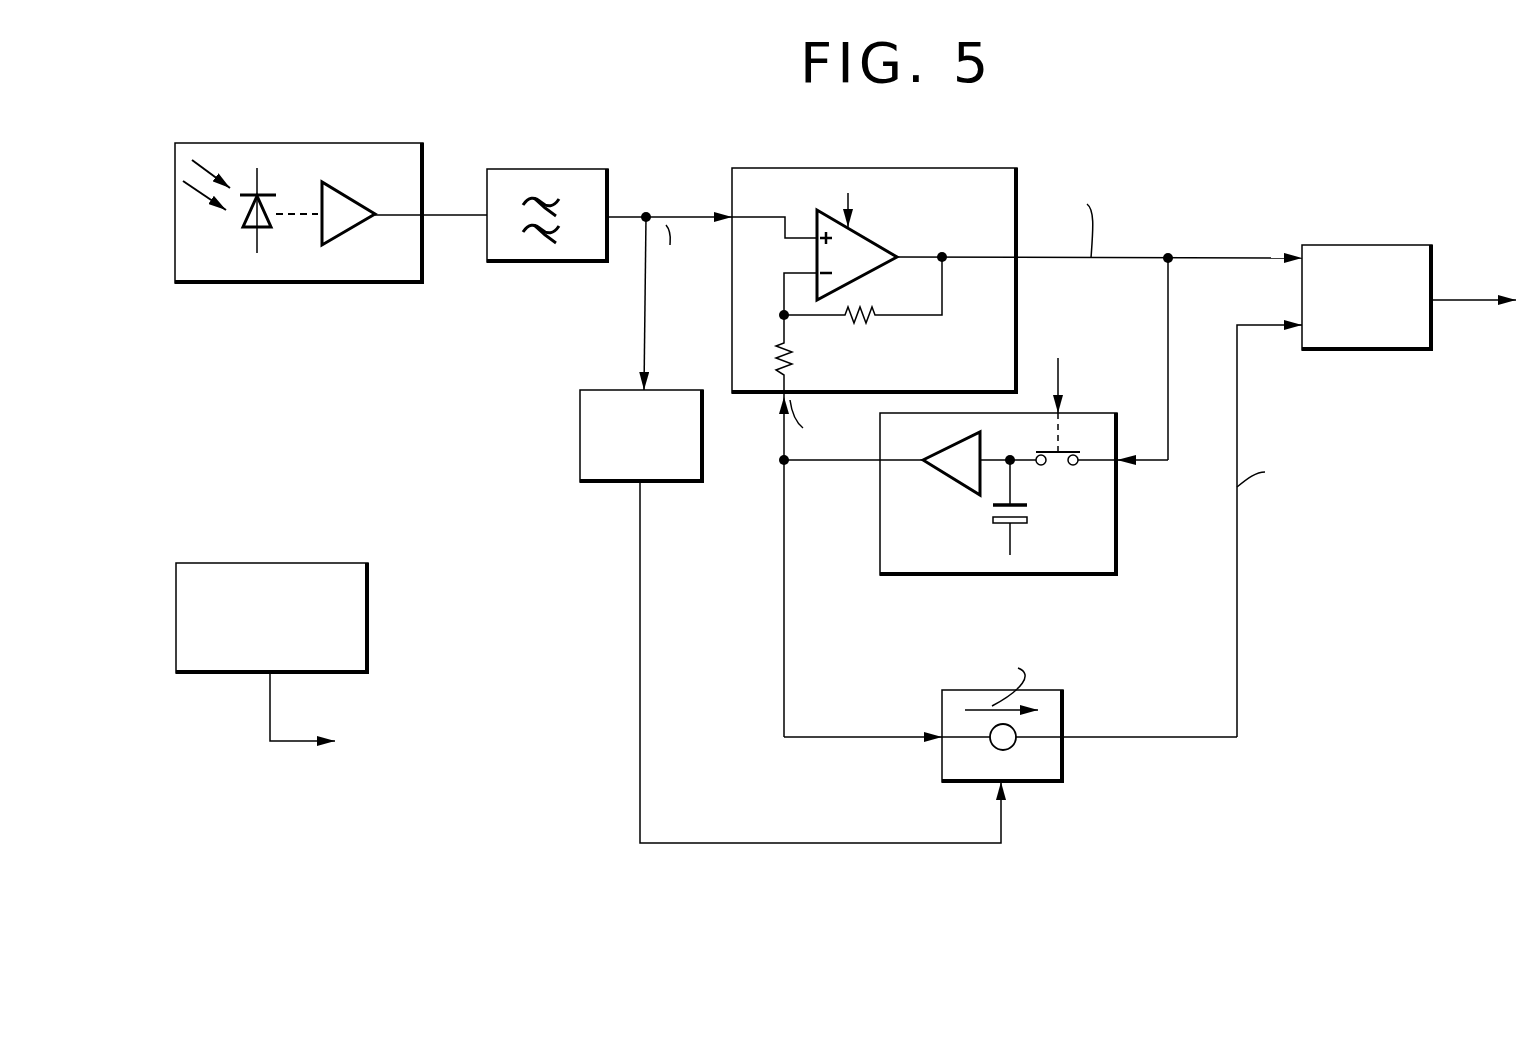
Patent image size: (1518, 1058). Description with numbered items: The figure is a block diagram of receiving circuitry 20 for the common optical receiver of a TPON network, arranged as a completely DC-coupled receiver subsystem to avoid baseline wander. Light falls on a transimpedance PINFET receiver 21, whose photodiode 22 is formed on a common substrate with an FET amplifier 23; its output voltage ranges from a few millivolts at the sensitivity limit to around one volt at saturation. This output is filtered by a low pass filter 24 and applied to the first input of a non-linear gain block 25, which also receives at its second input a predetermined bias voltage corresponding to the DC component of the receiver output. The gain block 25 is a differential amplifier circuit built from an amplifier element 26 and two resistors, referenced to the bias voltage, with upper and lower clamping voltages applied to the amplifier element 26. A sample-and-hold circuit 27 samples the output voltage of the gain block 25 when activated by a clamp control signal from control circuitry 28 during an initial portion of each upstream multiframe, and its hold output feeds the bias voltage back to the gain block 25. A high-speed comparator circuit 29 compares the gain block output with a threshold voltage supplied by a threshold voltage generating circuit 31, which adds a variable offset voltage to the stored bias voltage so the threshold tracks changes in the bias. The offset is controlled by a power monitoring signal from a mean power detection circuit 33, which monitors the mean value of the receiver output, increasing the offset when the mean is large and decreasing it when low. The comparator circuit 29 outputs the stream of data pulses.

The receiving circuitry 20 is at (240, 447).
The PINFET receiver 21 is at (328, 143).
The photodiode 22 is at (243, 228).
The FET amplifier 23 is at (352, 232).
The low pass filter 24 is at (567, 169).
The non-linear gain block 25 is at (874, 251).
The amplifier element 26 is at (817, 210).
The sample-and-hold circuit 27 is at (935, 577).
The control circuitry 28 is at (300, 563).
The high-speed comparator circuit 29 is at (1328, 245).
The threshold voltage generating circuit 31 is at (1063, 692).
The mean power detection circuit 33 is at (580, 397).